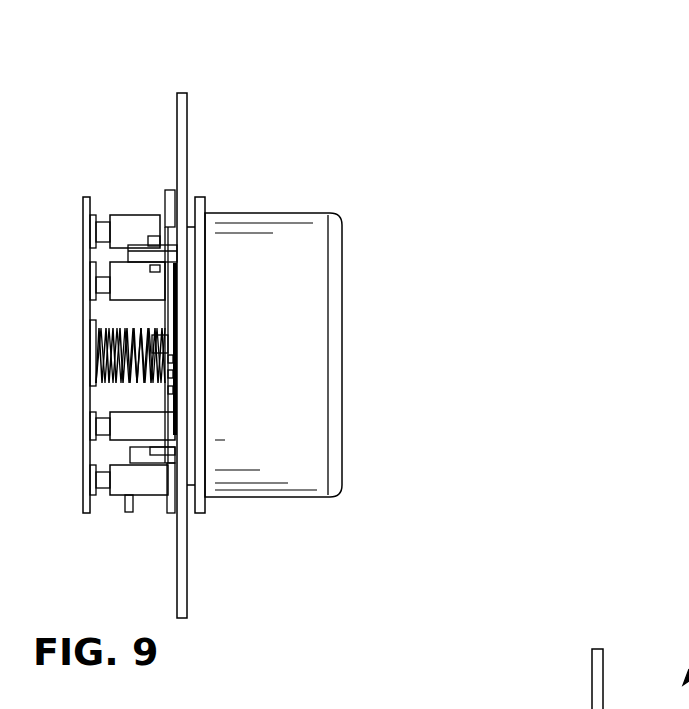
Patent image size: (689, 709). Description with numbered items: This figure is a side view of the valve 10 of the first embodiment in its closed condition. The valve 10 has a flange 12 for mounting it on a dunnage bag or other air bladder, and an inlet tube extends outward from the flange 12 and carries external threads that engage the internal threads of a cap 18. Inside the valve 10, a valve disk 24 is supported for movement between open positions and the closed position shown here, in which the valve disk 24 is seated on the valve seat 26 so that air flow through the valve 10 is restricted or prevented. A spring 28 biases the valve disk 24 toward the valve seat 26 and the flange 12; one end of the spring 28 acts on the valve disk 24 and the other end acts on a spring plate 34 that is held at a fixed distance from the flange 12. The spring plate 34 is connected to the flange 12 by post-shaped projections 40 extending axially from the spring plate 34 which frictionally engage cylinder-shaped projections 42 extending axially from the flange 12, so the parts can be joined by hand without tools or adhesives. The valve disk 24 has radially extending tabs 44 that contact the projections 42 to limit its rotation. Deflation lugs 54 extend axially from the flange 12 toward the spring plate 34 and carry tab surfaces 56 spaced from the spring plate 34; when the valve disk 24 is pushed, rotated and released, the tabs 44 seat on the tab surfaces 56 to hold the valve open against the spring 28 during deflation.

The valve 10 is at (270, 98).
The flange 12 is at (187, 112).
The cap 18 is at (307, 267).
The valve disk 24 is at (165, 396).
The valve seat 26 is at (176, 302).
The spring 28 is at (125, 335).
The spring plate 34 is at (85, 212).
The projections 40 is at (108, 500).
The projections 42 is at (114, 214).
The tabs 44 is at (166, 506).
The deflation lugs 54 is at (158, 237).
The tab surfaces 56 is at (130, 253).